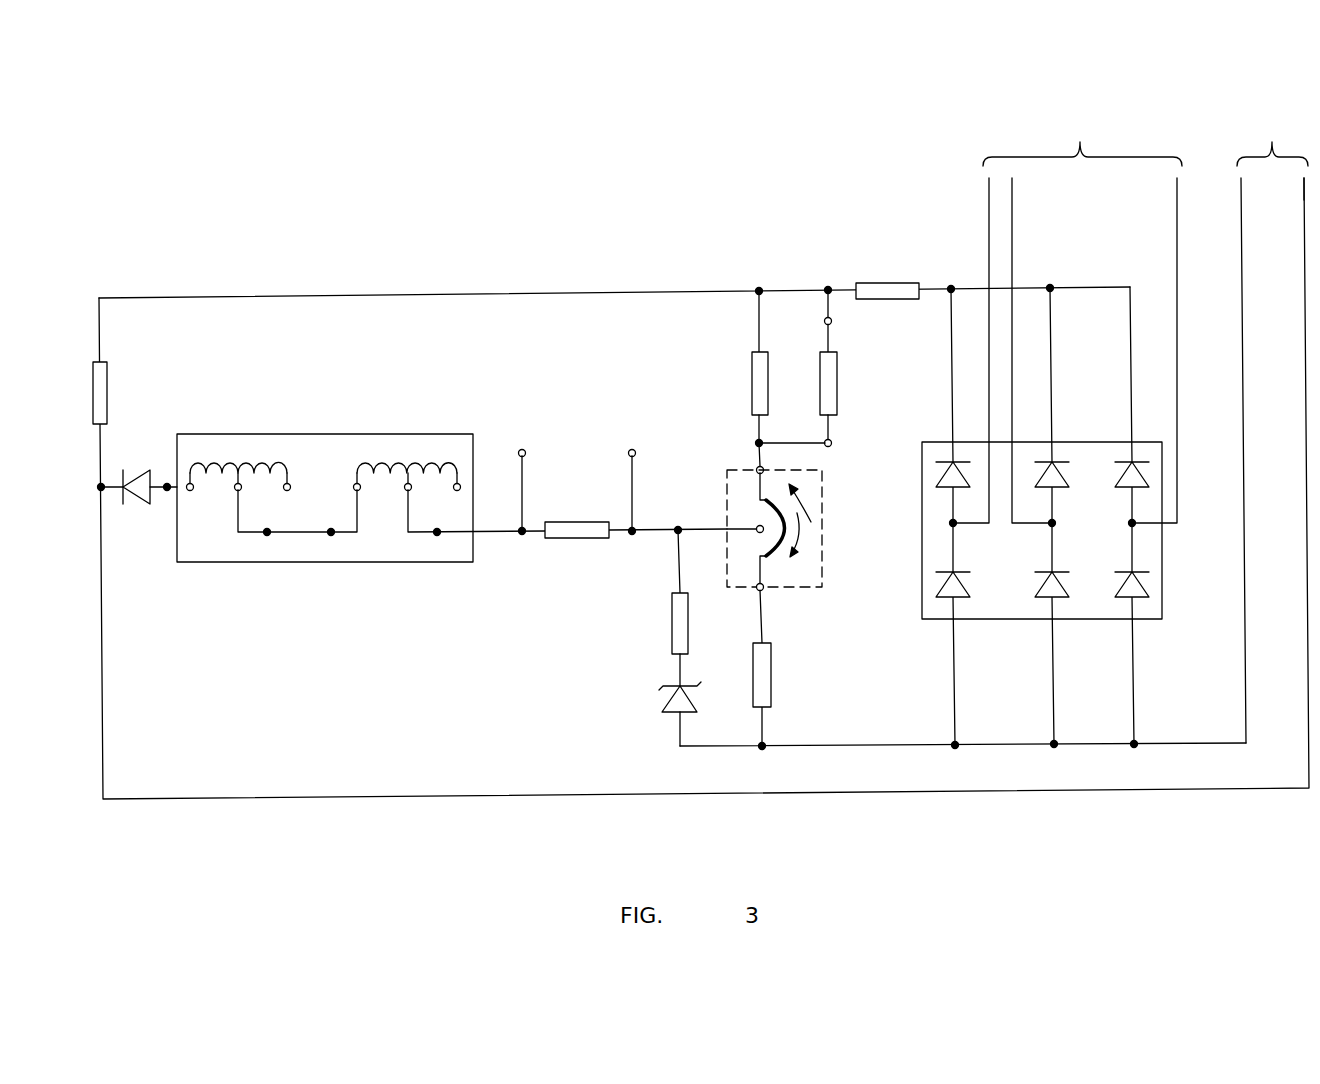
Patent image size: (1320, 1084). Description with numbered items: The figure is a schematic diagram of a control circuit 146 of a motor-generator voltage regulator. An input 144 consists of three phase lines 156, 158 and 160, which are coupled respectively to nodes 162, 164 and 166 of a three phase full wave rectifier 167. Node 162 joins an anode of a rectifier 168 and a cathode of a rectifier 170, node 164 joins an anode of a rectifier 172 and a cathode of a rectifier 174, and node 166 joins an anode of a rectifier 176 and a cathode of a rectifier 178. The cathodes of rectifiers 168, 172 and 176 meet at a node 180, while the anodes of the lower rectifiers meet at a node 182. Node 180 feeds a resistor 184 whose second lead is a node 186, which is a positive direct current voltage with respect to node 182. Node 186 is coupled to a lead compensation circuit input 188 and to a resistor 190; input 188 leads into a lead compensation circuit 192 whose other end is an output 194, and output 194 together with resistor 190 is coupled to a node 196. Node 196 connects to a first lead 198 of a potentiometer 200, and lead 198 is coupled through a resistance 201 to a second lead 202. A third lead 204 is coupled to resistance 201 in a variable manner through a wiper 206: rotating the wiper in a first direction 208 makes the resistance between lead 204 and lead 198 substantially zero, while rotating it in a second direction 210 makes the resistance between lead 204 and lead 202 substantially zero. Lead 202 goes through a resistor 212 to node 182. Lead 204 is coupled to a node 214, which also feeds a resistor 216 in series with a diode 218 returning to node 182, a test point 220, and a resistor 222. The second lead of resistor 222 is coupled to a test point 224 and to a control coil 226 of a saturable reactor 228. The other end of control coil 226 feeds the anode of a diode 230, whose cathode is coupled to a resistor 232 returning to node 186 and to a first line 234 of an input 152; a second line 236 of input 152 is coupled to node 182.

The input 144 is at (1077, 135).
The control circuit 146 is at (680, 178).
The input 152 is at (1272, 140).
The phase line 156 is at (985, 190).
The phase line 158 is at (1015, 196).
The phase line 160 is at (1175, 217).
The node 162 is at (956, 527).
The node 164 is at (1055, 527).
The node 166 is at (1130, 520).
The three phase full wave rectifier 167 is at (1143, 619).
The rectifier 168 is at (940, 460).
The rectifier 170 is at (945, 600).
The rectifier 172 is at (1058, 462).
The rectifier 174 is at (1046, 600).
The rectifier 176 is at (1130, 460).
The rectifier 178 is at (1145, 592).
The node 180 is at (951, 285).
The node 182 is at (955, 750).
The resistor 184 is at (882, 283).
The node 186 is at (818, 288).
The lead compensation circuit input 188 is at (832, 322).
The resistor 190 is at (752, 365).
The lead compensation circuit 192 is at (838, 365).
The output 194 is at (832, 442).
The node 196 is at (762, 443).
The first lead 198 is at (757, 466).
The potentiometer 200 is at (822, 578).
The resistance 201 is at (775, 490).
The second lead 202 is at (763, 590).
The third lead 204 is at (757, 527).
The wiper 206 is at (770, 518).
The first direction 208 is at (807, 507).
The second direction 210 is at (798, 530).
The resistor 212 is at (772, 698).
The node 214 is at (668, 535).
The resistor 216 is at (672, 625).
The diode 218 is at (662, 697).
The test point 220 is at (632, 448).
The resistor 222 is at (580, 540).
The test point 224 is at (522, 448).
The control coil 226 is at (370, 456).
The saturable reactor 228 is at (240, 436).
The diode 230 is at (137, 482).
The resistor 232 is at (108, 372).
The first line 234 is at (1305, 262).
The second line 236 is at (1242, 268).